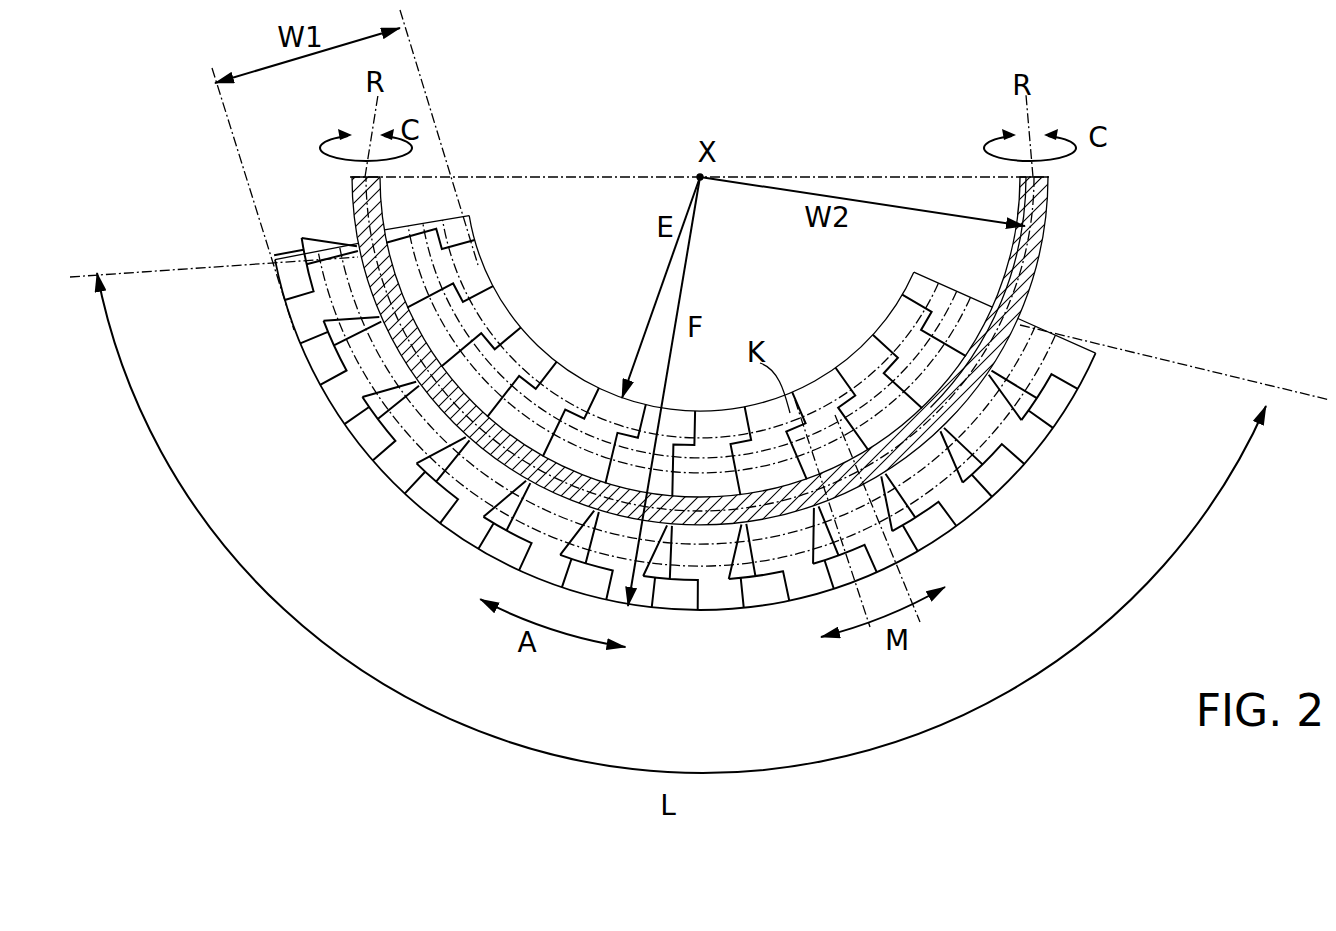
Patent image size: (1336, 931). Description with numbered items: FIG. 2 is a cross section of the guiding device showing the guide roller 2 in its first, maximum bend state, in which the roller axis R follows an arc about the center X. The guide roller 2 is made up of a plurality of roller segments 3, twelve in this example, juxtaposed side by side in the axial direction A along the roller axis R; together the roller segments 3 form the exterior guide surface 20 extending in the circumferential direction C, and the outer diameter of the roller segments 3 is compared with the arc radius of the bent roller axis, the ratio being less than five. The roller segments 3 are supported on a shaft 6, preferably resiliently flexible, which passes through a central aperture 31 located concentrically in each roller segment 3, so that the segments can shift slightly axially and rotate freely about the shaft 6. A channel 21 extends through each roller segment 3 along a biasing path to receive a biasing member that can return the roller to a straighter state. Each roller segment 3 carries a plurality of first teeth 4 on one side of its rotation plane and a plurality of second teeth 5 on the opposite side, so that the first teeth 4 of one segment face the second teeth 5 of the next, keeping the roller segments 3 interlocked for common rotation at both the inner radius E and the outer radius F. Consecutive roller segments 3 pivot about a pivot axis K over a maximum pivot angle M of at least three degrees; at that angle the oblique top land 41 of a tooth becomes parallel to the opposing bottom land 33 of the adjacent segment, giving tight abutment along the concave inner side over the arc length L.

The guide roller 2 is at (385, 493).
The roller segments 3 is at (372, 440).
The first teeth 4 is at (300, 330).
The second teeth 5 is at (330, 378).
The shaft 6 is at (352, 214).
The exterior guide surface 20 is at (540, 343).
The channel 21 is at (560, 383).
The central aperture 31 is at (360, 255).
The bottom land 33 is at (840, 378).
The top land 41 is at (823, 392).